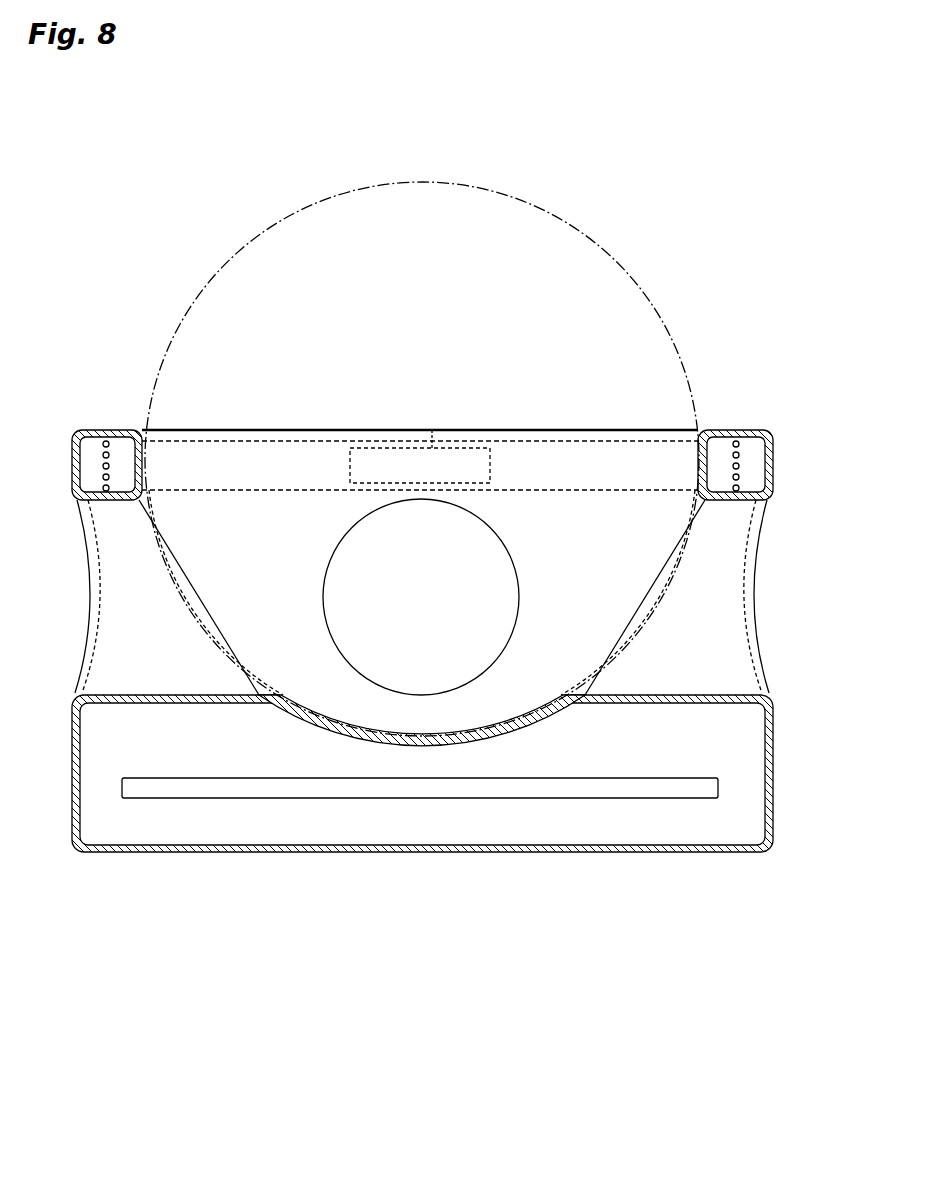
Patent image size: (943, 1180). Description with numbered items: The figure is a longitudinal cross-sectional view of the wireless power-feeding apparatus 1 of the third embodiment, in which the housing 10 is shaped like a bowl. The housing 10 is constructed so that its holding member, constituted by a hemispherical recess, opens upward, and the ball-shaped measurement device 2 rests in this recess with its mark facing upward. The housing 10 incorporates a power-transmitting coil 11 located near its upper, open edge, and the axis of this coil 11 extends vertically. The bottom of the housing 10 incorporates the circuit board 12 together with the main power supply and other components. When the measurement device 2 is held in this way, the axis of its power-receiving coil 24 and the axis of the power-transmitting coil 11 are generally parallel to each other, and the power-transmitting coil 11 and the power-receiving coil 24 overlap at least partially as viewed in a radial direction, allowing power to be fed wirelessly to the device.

The wireless power-feeding apparatus 1 is at (662, 862).
The ball-shaped measurement device 2 is at (429, 184).
The housing 10 is at (768, 430).
The power-transmitting coil 11 is at (95, 430).
The circuit board 12 is at (286, 796).
The power-receiving coil 24 is at (432, 425).